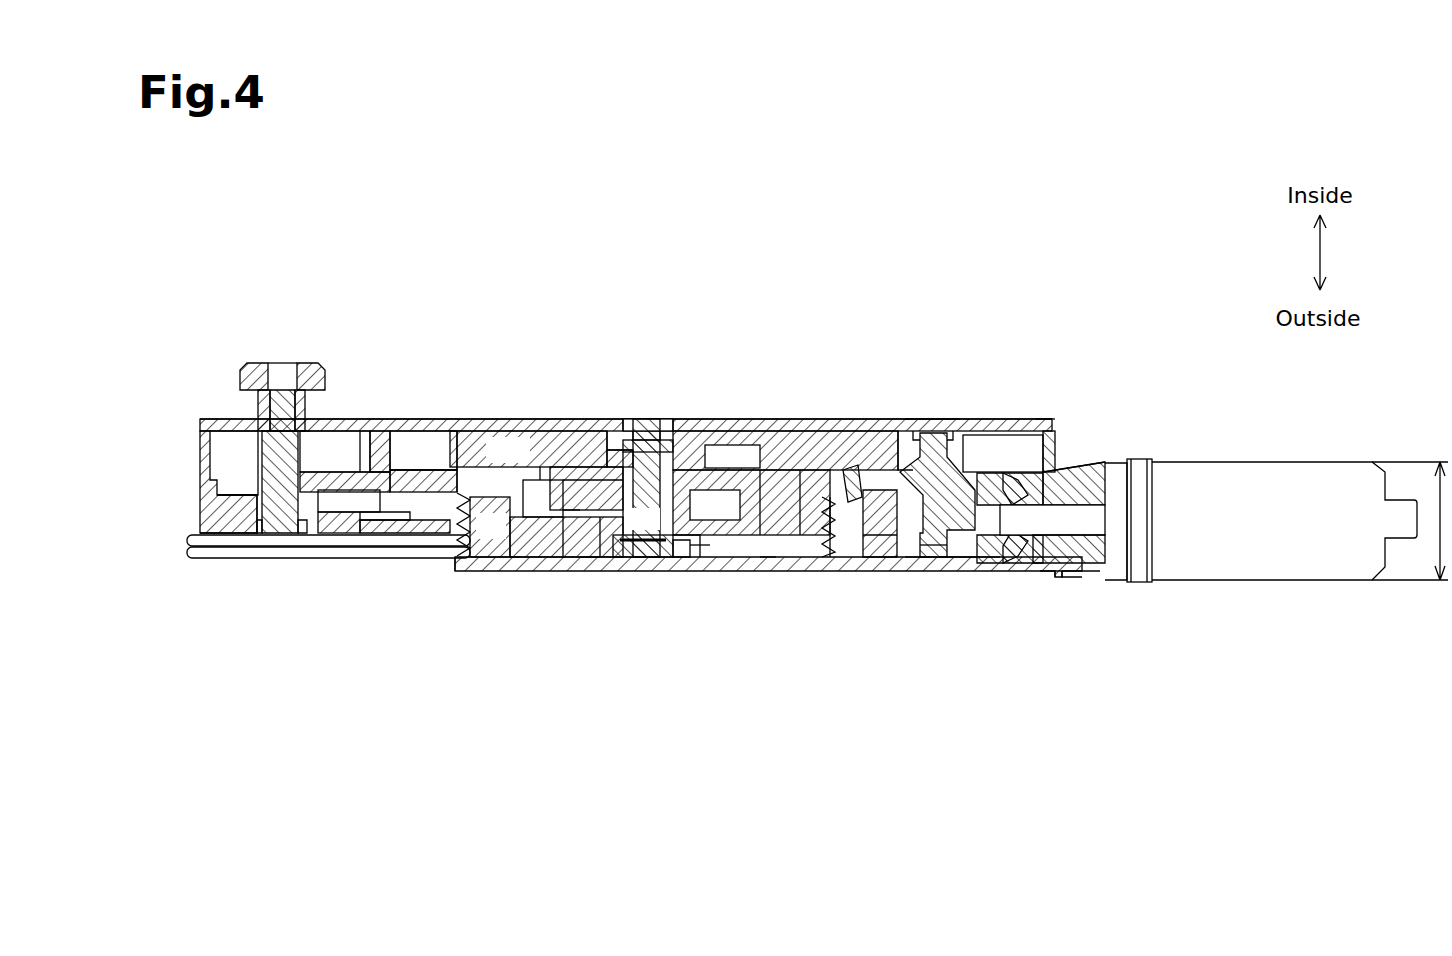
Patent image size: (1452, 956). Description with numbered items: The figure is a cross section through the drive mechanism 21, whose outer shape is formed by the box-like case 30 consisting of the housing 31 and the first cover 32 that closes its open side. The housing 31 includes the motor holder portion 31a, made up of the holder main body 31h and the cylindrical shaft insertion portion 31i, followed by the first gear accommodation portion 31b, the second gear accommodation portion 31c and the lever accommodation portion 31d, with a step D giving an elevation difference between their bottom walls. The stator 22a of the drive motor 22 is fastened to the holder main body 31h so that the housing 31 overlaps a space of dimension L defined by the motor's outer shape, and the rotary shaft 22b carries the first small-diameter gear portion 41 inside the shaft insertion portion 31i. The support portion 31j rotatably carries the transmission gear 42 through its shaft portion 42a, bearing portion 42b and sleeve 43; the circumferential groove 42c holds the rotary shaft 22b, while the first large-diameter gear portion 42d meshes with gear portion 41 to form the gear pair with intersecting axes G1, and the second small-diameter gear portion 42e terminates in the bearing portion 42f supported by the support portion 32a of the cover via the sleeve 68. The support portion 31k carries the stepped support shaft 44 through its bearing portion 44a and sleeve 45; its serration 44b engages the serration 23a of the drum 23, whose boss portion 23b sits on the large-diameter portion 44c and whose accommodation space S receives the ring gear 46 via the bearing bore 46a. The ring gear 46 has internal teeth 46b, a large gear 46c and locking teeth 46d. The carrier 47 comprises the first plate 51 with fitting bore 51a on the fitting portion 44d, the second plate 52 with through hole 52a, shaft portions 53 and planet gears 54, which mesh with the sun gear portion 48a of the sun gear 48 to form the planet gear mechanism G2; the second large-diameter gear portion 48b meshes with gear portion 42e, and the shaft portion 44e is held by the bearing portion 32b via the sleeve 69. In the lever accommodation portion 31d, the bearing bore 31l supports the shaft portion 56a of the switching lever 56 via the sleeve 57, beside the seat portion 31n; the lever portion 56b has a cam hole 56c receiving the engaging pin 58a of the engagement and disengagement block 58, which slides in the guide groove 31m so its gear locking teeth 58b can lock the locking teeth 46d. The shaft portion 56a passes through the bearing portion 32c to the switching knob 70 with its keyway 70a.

The drive mechanism 21 is at (1003, 293).
The drive motor 22 is at (1268, 470).
The stator 22a is at (1185, 470).
The rotary shaft 22b is at (985, 572).
The drum 23 is at (490, 572).
The serration 23a is at (630, 560).
The boss portion 23b is at (560, 560).
The case 30 is at (1097, 470).
The housing 31 is at (1108, 568).
The motor holder portion 31a is at (1010, 660).
The first gear accommodation portion 31b is at (960, 572).
The second gear accommodation portion 31c is at (800, 572).
The lever accommodation portion 31d is at (330, 533).
The holder main body 31h is at (1088, 574).
The shaft insertion portion 31i is at (1050, 574).
The support portion 31j is at (915, 572).
The support portion 31k is at (690, 562).
The bearing bore 31l is at (268, 547).
The guide groove 31m is at (385, 525).
The seat portion 31n is at (215, 500).
The first cover 32 is at (215, 423).
The support portion 32a is at (920, 430).
The bearing portion 32b is at (648, 430).
The bearing portion 32c is at (235, 440).
The first small-diameter gear portion 41 is at (1030, 470).
The transmission gear 42 is at (962, 462).
The shaft portion 42a is at (885, 572).
The bearing portion 42b is at (930, 572).
The circumferential groove 42c is at (860, 555).
The first large-diameter gear portion 42d is at (1060, 480).
The second small-diameter gear portion 42e is at (985, 462).
The bearing portion 42f is at (940, 455).
The sleeve 43 is at (980, 518).
The support shaft 44 is at (600, 480).
The bearing portion 44a is at (665, 558).
The serration 44b is at (705, 562).
The large-diameter portion 44c is at (700, 566).
The fitting portion 44d is at (685, 465).
The shaft portion 44e is at (652, 445).
The sleeve 45 is at (646, 518).
The ring gear 46 is at (830, 440).
The bearing bore 46a is at (590, 575).
The internal teeth 46b is at (770, 485).
The large gear 46c is at (790, 485).
The locking teeth 46d is at (476, 470).
The carrier 47 is at (553, 495).
The sun gear 48 is at (740, 450).
The sun gear portion 48a is at (729, 457).
The second large-diameter gear portion 48b is at (890, 450).
The first plate 51 is at (535, 565).
The fitting bore 51a is at (600, 560).
The second plate 52 is at (525, 485).
The through hole 52a is at (700, 475).
The shaft portions 53 is at (541, 449).
The planet gears 54 is at (483, 525).
The switching lever 56 is at (305, 455).
The shaft portion 56a is at (308, 430).
The lever portion 56b is at (360, 470).
The cam hole 56c is at (415, 490).
The sleeve 57 is at (258, 540).
The engagement and disengagement block 58 is at (445, 490).
The engaging pin 58a is at (405, 480).
The gear locking teeth 58b is at (430, 525).
The sleeve 68 is at (910, 490).
The sleeve 69 is at (612, 485).
The switching knob 70 is at (255, 366).
The keyway 70a is at (300, 368).
The step D is at (450, 558).
The accommodation space S is at (515, 557).
The gear pair with intersecting axes G1 is at (1120, 380).
The planet gear mechanism G2 is at (768, 560).
The dimension L is at (1433, 553).